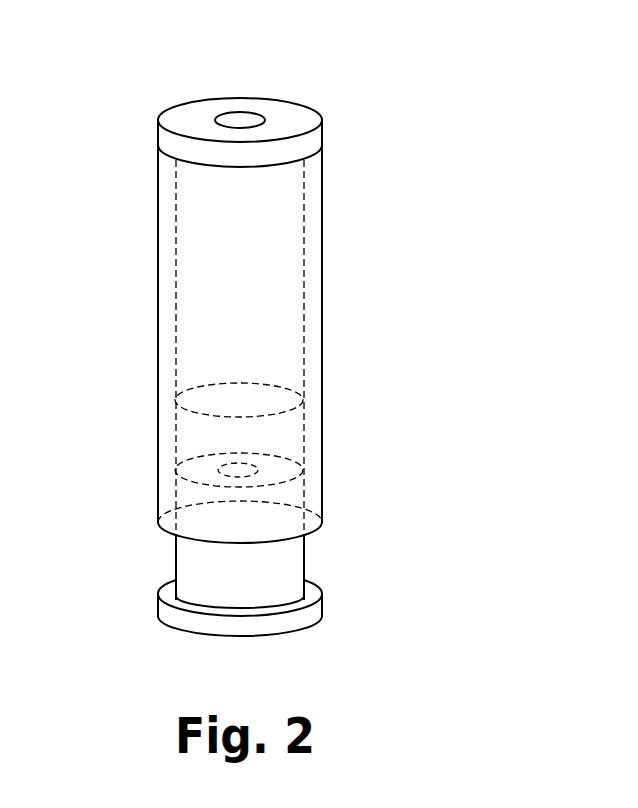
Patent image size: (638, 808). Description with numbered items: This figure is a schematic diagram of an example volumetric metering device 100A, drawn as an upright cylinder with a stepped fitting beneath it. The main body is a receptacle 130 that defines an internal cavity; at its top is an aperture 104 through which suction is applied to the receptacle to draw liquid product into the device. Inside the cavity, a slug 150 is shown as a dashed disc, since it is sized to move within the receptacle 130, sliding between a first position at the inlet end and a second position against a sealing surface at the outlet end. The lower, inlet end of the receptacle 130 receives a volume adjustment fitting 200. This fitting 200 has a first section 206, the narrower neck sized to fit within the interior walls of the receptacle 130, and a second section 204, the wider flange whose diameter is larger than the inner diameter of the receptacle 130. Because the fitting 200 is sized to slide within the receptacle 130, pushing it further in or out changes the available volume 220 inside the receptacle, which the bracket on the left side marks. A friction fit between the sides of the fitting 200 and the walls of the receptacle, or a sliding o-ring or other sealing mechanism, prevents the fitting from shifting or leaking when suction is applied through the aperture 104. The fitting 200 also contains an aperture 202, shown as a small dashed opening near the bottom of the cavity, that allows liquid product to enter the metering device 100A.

The metering device 100A is at (388, 68).
The aperture 104 is at (247, 112).
The receptacle 130 is at (322, 230).
The available volume 220 is at (143, 148).
The slug 150 is at (265, 383).
The aperture 202 is at (253, 467).
The first section 206 is at (173, 558).
The volume adjustment fitting 200 is at (306, 589).
The second section 204 is at (293, 632).